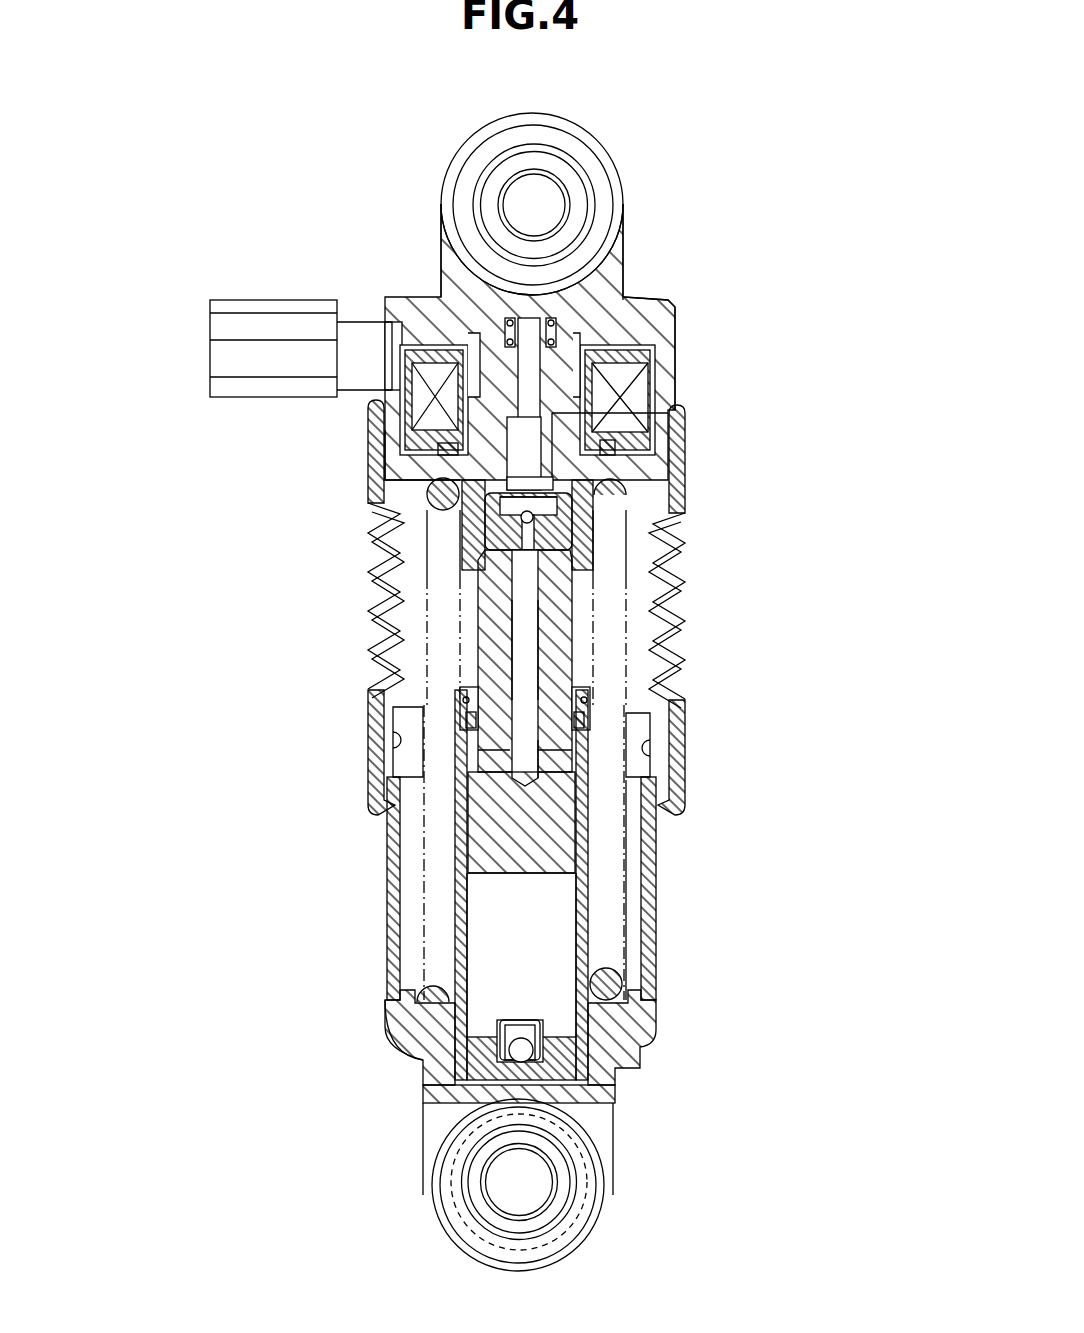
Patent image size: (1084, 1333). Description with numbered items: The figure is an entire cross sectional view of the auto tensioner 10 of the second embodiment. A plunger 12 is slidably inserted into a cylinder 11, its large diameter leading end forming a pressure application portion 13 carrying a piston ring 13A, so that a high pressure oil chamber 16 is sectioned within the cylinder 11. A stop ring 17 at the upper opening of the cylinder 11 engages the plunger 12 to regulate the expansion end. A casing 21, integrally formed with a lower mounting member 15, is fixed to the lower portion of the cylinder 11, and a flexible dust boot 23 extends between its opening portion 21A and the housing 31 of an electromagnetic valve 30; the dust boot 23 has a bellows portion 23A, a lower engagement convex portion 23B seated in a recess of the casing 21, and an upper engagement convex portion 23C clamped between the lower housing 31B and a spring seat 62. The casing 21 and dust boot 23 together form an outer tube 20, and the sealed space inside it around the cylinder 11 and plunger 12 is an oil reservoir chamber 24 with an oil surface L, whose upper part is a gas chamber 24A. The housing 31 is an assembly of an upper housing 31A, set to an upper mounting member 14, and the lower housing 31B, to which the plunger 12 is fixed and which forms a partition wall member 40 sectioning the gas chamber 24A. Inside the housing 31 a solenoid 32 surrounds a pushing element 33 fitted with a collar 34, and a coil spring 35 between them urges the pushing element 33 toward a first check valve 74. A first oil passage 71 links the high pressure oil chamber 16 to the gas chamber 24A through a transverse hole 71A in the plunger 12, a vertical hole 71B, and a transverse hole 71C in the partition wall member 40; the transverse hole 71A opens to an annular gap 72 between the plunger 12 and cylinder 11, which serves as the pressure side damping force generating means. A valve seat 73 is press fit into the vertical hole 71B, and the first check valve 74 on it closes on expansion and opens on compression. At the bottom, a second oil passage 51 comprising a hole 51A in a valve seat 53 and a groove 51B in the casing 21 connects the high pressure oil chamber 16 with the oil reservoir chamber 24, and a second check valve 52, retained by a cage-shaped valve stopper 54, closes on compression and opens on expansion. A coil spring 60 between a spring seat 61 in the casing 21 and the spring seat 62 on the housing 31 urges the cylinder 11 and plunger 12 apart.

The auto tensioner 10 is at (300, 172).
The mounting member 14 is at (466, 153).
The mounting member 15 is at (445, 1205).
The cylinder 11 is at (455, 940).
The plunger 12 is at (478, 630).
The pressure application portion 13 is at (510, 745).
The piston ring 13A is at (445, 742).
The high pressure oil chamber 16 is at (540, 960).
The stop ring 17 is at (466, 700).
The outer tube 20 is at (535, 593).
The casing 21 is at (628, 912).
The opening portion 21A is at (425, 745).
The dust boot 23 is at (686, 605).
The bellows portion 23A is at (690, 668).
The lower engagement convex portion 23B is at (667, 806).
The upper engagement convex portion 23C is at (688, 410).
The oil reservoir chamber 24 is at (420, 905).
The gas chamber 24A is at (410, 548).
The electromagnetic valve 30 is at (686, 348).
The housing 31 is at (388, 442).
The upper housing 31A is at (626, 302).
The lower housing 31B is at (388, 462).
The solenoid 32 is at (640, 385).
The pushing element 33 is at (603, 448).
The collar 34 is at (668, 306).
The coil spring 35 is at (438, 297).
The partition wall member 40 is at (660, 468).
The second oil passage 51 is at (612, 1057).
The hole 51A is at (547, 1083).
The groove 51B is at (408, 1020).
The second check valve 52 is at (533, 1050).
The valve seat 53 is at (472, 1058).
The valve stopper 54 is at (545, 1030).
The coil spring 60 is at (430, 518).
The spring seat 61 is at (430, 990).
The spring seat 62 is at (440, 497).
The first oil passage 71 is at (527, 652).
The transverse hole 71A is at (568, 760).
The vertical hole 71B is at (533, 612).
The transverse hole 71C is at (560, 520).
The annular gap 72 is at (590, 835).
The valve seat 73 is at (565, 555).
The first check valve 74 is at (540, 528).
The oil surface L is at (455, 862).